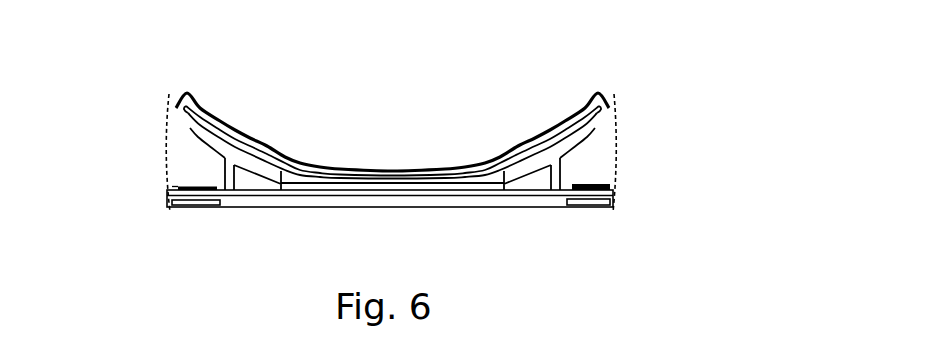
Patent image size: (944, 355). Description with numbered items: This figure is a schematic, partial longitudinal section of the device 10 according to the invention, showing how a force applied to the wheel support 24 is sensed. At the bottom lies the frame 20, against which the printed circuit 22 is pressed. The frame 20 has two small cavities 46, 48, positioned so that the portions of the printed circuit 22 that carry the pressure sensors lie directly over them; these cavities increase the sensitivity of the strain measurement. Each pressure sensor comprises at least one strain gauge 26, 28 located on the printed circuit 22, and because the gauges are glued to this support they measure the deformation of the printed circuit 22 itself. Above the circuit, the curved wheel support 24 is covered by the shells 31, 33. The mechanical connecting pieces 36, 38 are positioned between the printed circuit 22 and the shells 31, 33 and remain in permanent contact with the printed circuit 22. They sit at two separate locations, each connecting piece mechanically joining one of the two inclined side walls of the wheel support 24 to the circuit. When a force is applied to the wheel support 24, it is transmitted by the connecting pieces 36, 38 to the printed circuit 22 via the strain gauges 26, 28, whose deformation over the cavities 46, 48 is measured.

The light-emitting device 10 is at (599, 77).
The frame 20 is at (613, 207).
The printed circuit 22 is at (612, 196).
The wheel support 24 is at (268, 148).
The strain gauge 26 is at (200, 184).
The strain gauge 28 is at (590, 181).
The shell 31 is at (375, 171).
The shell 33 is at (392, 146).
The mechanical connecting piece 36 is at (200, 131).
The mechanical connecting piece 38 is at (588, 150).
The cavity 46 is at (196, 208).
The cavity 48 is at (574, 207).